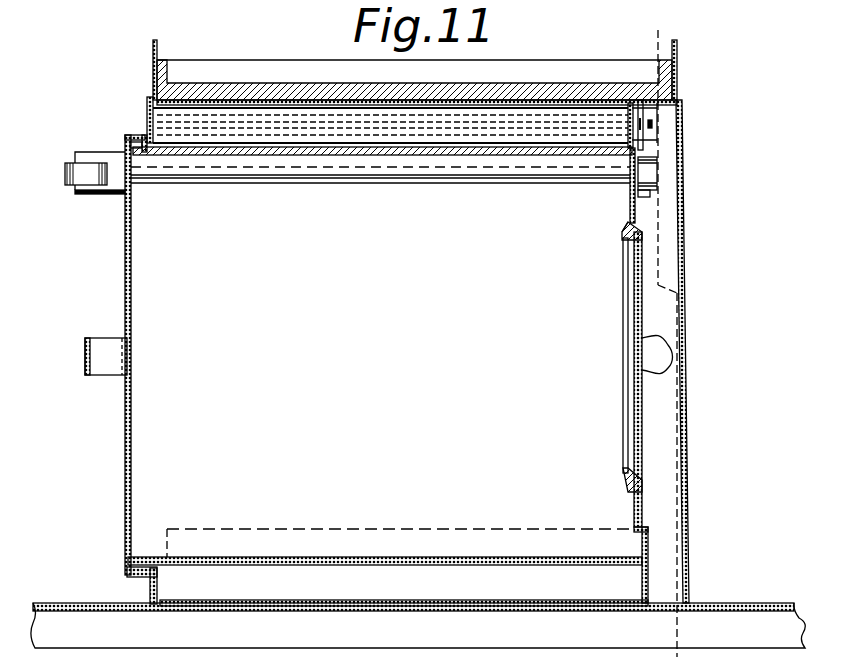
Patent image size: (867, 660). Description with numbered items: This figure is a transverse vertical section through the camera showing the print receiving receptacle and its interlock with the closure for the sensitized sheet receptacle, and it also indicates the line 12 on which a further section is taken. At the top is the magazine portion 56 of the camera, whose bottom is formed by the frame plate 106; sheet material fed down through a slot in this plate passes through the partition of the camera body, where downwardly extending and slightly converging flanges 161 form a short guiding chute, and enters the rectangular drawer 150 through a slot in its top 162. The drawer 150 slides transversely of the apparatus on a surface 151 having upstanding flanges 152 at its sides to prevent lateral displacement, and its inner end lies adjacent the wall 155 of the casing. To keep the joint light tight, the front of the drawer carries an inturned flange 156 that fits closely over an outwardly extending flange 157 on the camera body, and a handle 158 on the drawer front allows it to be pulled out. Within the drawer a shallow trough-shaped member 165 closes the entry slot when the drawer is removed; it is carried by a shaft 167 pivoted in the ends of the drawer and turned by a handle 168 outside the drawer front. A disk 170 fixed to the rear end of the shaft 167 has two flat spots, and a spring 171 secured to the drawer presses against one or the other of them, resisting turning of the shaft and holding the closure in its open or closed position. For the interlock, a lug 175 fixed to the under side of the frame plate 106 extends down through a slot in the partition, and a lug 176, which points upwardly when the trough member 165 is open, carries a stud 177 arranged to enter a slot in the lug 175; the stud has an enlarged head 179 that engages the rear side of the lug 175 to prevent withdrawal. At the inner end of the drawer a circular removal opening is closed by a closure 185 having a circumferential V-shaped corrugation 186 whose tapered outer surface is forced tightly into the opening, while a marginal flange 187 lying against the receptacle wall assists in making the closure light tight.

The section line 12 is at (695, 23).
The magazine portion 56 is at (153, 50).
The frame plate 106 is at (303, 54).
The drawer 150 is at (132, 265).
The surface 151 is at (498, 562).
The upstanding flanges 152 is at (352, 528).
The wall 155 is at (687, 250).
The inturned flange 156 is at (135, 134).
The outwardly extending flange 157 is at (147, 150).
The handle 158 is at (85, 345).
The flanges 161 is at (313, 132).
The top 162 is at (465, 148).
The trough-shaped member 165 is at (361, 173).
The shaft 167 is at (110, 198).
The handle 168 is at (80, 172).
The disk 170 is at (652, 173).
The spring 171 is at (632, 200).
The lug 175 is at (647, 110).
The lug 176 is at (638, 130).
The stud 177 is at (640, 123).
The enlarged head 179 is at (652, 124).
The closure 185 is at (630, 410).
The V-shaped corrugation 186 is at (620, 240).
The marginal flange 187 is at (640, 220).